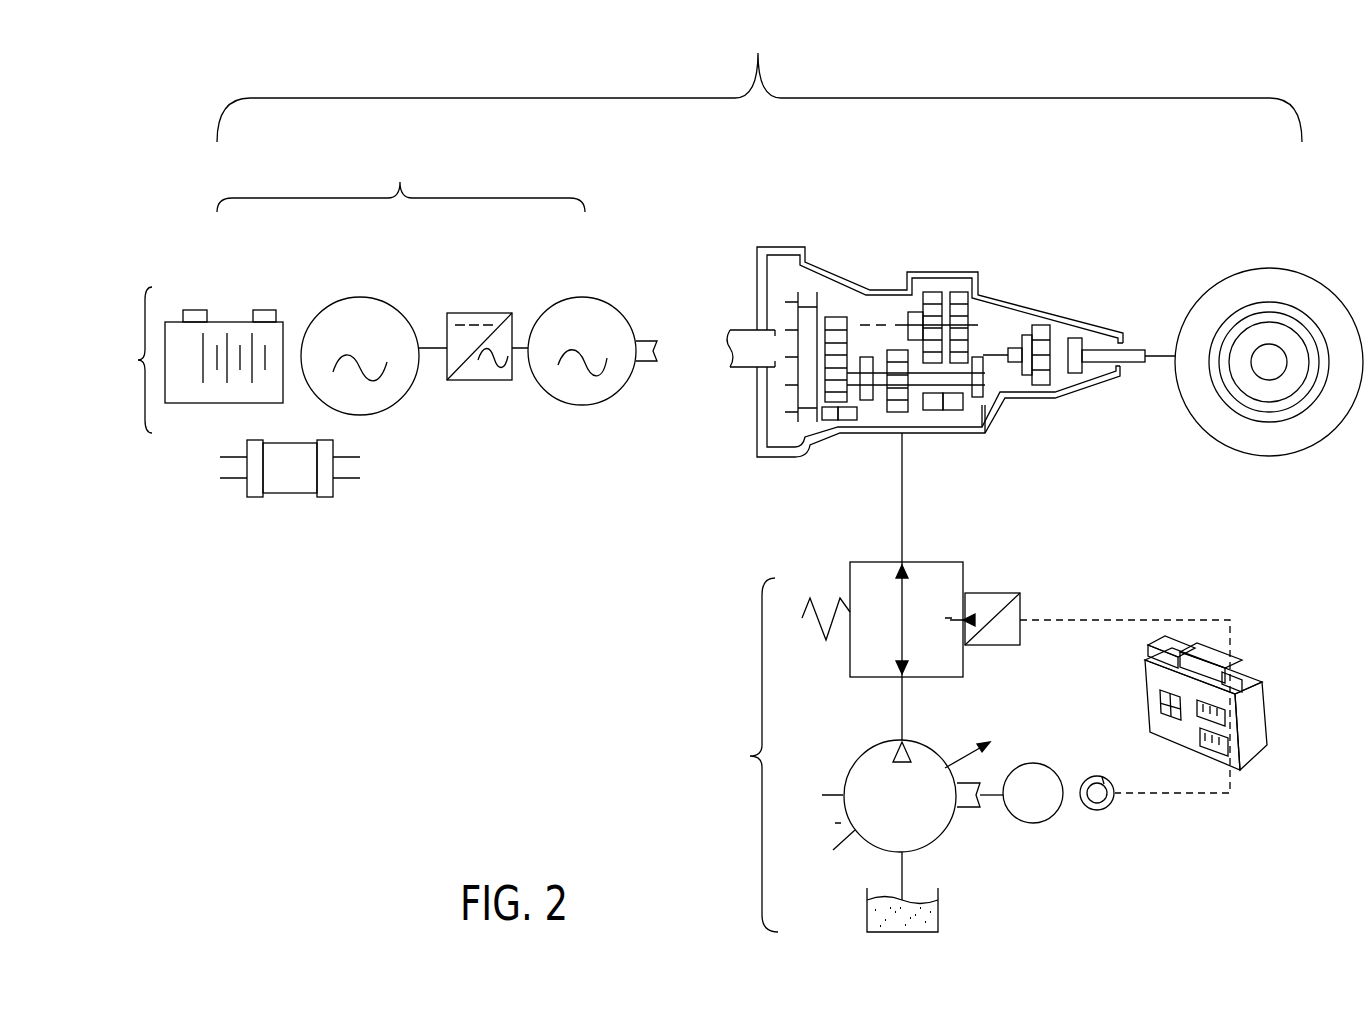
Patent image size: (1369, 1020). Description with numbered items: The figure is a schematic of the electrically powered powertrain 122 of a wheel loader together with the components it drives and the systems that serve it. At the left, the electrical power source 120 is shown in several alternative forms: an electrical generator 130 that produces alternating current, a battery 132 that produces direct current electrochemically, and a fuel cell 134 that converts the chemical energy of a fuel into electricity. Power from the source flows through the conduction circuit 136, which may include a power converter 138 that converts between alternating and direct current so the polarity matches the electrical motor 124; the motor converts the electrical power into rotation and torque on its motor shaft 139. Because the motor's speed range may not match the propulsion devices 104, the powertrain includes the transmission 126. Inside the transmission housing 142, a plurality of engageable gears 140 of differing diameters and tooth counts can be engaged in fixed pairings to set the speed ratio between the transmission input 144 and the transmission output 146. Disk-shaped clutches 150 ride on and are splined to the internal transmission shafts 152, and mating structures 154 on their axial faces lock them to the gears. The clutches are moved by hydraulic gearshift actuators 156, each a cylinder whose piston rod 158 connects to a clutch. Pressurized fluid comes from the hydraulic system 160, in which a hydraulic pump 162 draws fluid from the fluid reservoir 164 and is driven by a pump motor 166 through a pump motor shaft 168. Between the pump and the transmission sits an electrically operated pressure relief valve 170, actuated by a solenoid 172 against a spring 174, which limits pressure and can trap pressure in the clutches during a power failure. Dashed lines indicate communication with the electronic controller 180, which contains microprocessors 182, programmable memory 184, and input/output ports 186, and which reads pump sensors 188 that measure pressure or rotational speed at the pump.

The propulsion devices 104 is at (1303, 452).
The electrical power source 120 is at (128, 360).
The electrically powered powertrain 122 is at (759, 79).
The electrical motor 124 is at (560, 298).
The transmission 126 is at (1020, 232).
The electrical generator 130 is at (360, 297).
The battery 132 is at (233, 335).
The fuel cell 134 is at (292, 481).
The conduction circuit 136 is at (401, 181).
The power converter 138 is at (480, 381).
The motor shaft 139 is at (645, 340).
The engageable gears 140 is at (957, 292).
The transmission housing 142 is at (890, 285).
The transmission input 144 is at (745, 330).
The transmission output 146 is at (1130, 350).
The clutches 150 is at (862, 400).
The internal transmission shafts 152 is at (905, 398).
The mating structures 154 is at (990, 388).
The hydraulic gearshift actuators 156 is at (848, 350).
The piston rod 158 is at (850, 420).
The hydraulic system 160 is at (746, 755).
The hydraulic pump 162 is at (935, 745).
The fluid reservoir 164 is at (940, 912).
The pump motor 166 is at (1045, 822).
The pump motor shaft 168 is at (1000, 793).
The pressure relief valve 170 is at (945, 560).
The solenoid 172 is at (1003, 592).
The spring 174 is at (828, 605).
The electronic controller 180 is at (1234, 738).
The microprocessors 182 is at (1258, 695).
The programmable memory 184 is at (1162, 725).
The input/output ports 186 is at (1213, 770).
The pump sensors 188 is at (1098, 811).